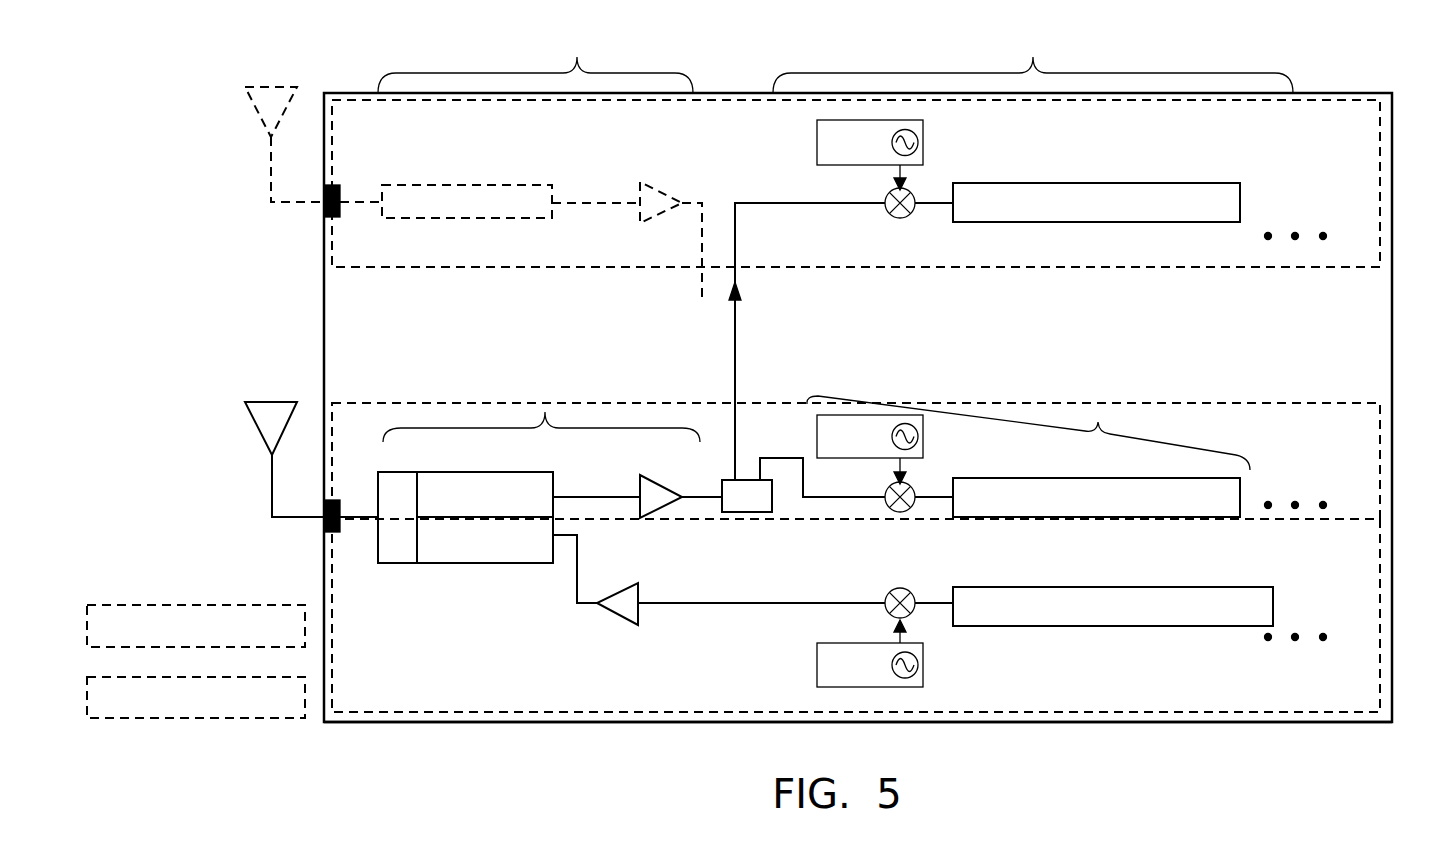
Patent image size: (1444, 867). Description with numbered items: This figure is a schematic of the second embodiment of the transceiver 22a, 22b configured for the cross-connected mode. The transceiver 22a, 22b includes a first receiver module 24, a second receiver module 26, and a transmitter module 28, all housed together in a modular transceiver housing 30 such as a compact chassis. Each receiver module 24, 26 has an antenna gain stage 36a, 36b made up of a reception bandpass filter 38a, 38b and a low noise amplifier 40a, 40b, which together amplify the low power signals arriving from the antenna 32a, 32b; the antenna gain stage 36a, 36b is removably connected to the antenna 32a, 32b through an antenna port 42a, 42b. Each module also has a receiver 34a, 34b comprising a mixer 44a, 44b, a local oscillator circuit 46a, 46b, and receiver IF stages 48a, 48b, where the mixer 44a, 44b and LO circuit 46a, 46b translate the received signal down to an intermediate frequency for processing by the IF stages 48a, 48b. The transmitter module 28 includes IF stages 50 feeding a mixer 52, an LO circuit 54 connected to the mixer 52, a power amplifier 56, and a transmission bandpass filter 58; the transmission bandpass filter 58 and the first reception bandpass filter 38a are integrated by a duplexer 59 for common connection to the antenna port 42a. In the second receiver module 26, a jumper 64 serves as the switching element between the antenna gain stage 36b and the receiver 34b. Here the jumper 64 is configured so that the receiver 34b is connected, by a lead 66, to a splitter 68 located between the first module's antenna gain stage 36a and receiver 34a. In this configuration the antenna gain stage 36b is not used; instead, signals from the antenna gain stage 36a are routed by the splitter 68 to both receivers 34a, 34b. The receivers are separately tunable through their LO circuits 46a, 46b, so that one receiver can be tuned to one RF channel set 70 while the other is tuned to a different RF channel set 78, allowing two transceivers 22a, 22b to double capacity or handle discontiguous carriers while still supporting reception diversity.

The transceiver 22a is at (858, 450).
The transceiver 22b is at (432, 732).
The first receiver module 24 is at (1380, 440).
The second receiver module 26 is at (1380, 157).
The transmitter module 28 is at (1380, 555).
The modular transceiver housing 30 is at (1048, 722).
The antenna 32a is at (255, 415).
The antenna 32b is at (258, 104).
The receiver 34a is at (1028, 415).
The receiver 34b is at (1033, 59).
The antenna gain stage 36a is at (541, 403).
The antenna gain stage 36b is at (535, 59).
The reception bandpass filter 38a is at (486, 471).
The reception bandpass filter 38b is at (485, 184).
The low noise amplifier 40a is at (653, 482).
The low noise amplifier 40b is at (655, 185).
The antenna port 42a is at (341, 522).
The antenna port 42b is at (341, 198).
The mixer 44a is at (888, 487).
The mixer 44b is at (905, 218).
The local oscillator circuit 46a is at (817, 437).
The local oscillator circuit 46b is at (923, 147).
The receiver IF stages 48a is at (1018, 478).
The receiver IF stages 48b is at (1096, 182).
The IF stages 50 is at (1005, 585).
The mixer 52 is at (893, 590).
The LO circuit 54 is at (923, 650).
The power amplifier 56 is at (640, 595).
The transmission bandpass filter 58 is at (485, 563).
The duplexer 59 is at (465, 550).
The jumper 64 is at (737, 305).
The lead 66 is at (735, 388).
The splitter 68 is at (745, 512).
The RF channel set 70 is at (215, 605).
The RF channel set 78 is at (175, 718).